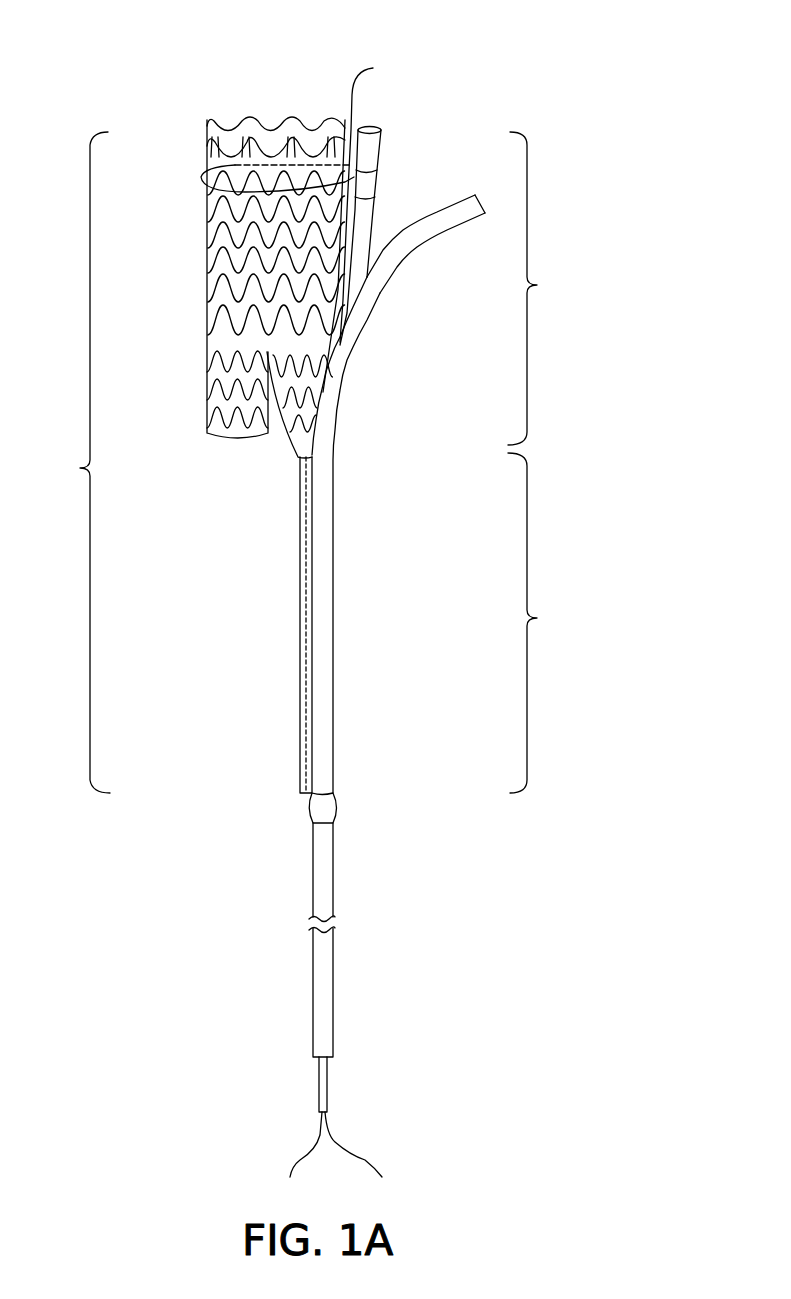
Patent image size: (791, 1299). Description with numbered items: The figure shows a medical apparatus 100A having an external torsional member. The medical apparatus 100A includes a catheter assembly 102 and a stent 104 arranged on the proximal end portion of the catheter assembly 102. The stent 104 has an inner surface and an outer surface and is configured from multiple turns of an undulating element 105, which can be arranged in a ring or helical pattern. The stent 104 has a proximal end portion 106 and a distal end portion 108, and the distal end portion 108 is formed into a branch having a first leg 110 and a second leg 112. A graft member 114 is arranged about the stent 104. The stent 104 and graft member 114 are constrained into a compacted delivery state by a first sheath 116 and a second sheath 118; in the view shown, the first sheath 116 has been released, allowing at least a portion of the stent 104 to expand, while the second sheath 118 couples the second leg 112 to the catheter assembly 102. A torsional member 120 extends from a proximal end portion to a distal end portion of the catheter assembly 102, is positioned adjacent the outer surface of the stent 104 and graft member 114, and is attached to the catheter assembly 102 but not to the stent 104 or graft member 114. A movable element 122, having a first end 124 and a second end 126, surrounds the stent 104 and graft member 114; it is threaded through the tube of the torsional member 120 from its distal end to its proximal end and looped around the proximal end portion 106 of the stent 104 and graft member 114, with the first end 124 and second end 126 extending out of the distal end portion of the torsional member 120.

The medical apparatus 100A is at (302, 61).
The catheter assembly 102 is at (333, 866).
The stent 104 is at (72, 462).
The undulating element 105 is at (238, 334).
The proximal end portion 106 is at (545, 288).
The distal end portion 108 is at (545, 623).
The first leg 110 is at (224, 442).
The second leg 112 is at (300, 658).
The graft member 114 is at (222, 193).
The first sheath 116 is at (387, 287).
The second sheath 118 is at (333, 551).
The torsional member 120 is at (381, 128).
The movable element 122 is at (373, 68).
The first end 124 is at (355, 1148).
The second end 126 is at (305, 1140).